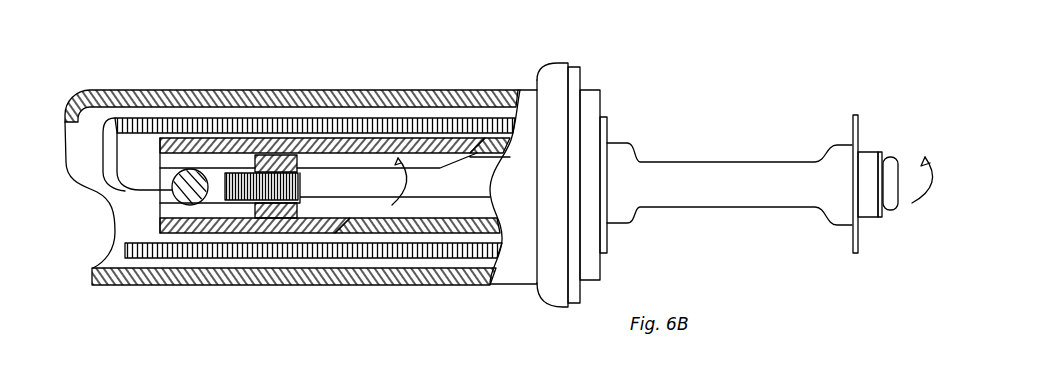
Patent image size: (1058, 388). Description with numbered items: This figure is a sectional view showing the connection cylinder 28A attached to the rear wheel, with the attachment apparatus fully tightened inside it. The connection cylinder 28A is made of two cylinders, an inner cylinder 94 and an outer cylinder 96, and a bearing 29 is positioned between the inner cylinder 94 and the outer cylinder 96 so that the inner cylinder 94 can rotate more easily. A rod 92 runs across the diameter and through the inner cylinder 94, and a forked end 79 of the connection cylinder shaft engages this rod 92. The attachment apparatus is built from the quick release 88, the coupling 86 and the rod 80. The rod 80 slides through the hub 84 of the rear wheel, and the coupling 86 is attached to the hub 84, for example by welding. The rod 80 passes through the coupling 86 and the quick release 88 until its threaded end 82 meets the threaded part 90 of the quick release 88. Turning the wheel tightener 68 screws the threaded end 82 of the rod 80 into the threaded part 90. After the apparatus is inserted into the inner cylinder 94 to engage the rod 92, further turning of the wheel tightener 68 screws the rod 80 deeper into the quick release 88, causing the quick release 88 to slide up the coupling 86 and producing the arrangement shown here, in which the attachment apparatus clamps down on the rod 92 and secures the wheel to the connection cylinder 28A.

The connection cylinder 28A is at (152, 285).
The bearing 29 is at (557, 62).
The wheel tightener 68 is at (888, 155).
The forked end 79 is at (160, 187).
The rod 80 is at (350, 190).
The threaded end 82 is at (244, 170).
The hub 84 is at (740, 165).
The coupling 86 is at (415, 232).
The quick release 88 is at (223, 230).
The threaded part 90 is at (275, 170).
The rod 92 is at (140, 190).
The inner cylinder 94 is at (353, 125).
The outer cylinder 96 is at (443, 92).